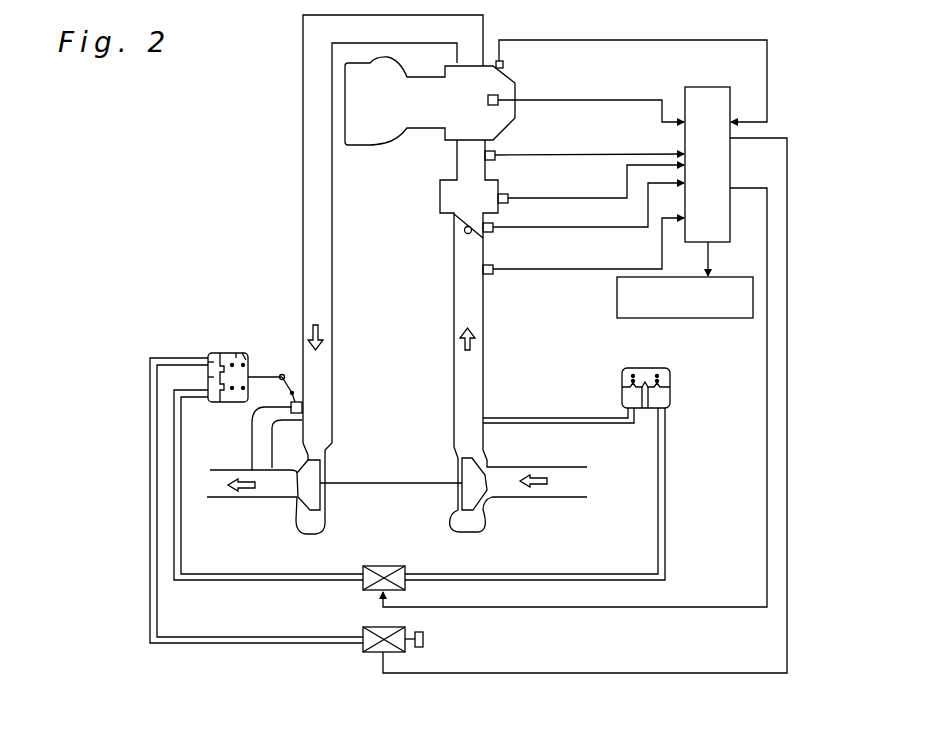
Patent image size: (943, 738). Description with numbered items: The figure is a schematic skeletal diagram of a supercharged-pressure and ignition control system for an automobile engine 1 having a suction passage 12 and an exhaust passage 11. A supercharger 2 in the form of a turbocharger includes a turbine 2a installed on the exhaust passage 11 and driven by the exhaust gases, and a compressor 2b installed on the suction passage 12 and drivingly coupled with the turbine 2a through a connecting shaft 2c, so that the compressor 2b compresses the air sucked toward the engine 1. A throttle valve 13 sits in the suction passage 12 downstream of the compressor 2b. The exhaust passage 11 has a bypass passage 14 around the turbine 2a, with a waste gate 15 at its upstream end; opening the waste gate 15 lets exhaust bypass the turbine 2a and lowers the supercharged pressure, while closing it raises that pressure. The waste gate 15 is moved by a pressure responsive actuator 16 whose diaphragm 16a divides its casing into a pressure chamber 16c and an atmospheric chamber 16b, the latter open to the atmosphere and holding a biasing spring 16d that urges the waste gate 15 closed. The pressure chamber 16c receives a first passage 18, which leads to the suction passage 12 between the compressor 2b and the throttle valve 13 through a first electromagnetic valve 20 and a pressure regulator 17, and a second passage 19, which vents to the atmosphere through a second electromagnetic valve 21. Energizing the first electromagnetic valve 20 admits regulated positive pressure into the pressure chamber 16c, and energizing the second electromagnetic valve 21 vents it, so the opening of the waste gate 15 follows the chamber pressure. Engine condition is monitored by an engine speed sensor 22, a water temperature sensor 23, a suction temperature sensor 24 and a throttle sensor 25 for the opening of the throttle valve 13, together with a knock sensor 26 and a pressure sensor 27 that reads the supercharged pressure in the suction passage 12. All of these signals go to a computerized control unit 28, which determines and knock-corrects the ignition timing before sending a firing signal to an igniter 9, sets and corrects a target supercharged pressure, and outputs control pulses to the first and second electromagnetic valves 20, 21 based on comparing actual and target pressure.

The automobile engine 1 is at (425, 132).
The supercharger 2 is at (397, 486).
The turbine 2a is at (308, 480).
The compressor 2b is at (472, 477).
The connecting shaft 2c is at (365, 485).
The igniter 9 is at (732, 320).
The exhaust passage 11 is at (332, 245).
The suction passage 12 is at (483, 318).
The throttle valve 13 is at (457, 233).
The bypass passage 14 is at (255, 430).
The waste gate 15 is at (303, 407).
The pressure responsive actuator 16 is at (224, 353).
The diaphragm 16a is at (210, 355).
The atmospheric chamber 16b is at (237, 355).
The pressure chamber 16c is at (208, 377).
The biasing spring 16d is at (246, 360).
The pressure regulator 17 is at (645, 368).
The first passage 18 is at (530, 573).
The second passage 19 is at (240, 645).
The first electromagnetic valve 20 is at (400, 566).
The second electromagnetic valve 21 is at (368, 652).
The engine speed sensor 22 is at (503, 92).
The water temperature sensor 23 is at (503, 150).
The suction temperature sensor 24 is at (514, 195).
The throttle sensor 25 is at (500, 233).
The knock sensor 26 is at (498, 45).
The pressure sensor 27 is at (500, 275).
The control unit 28 is at (705, 87).